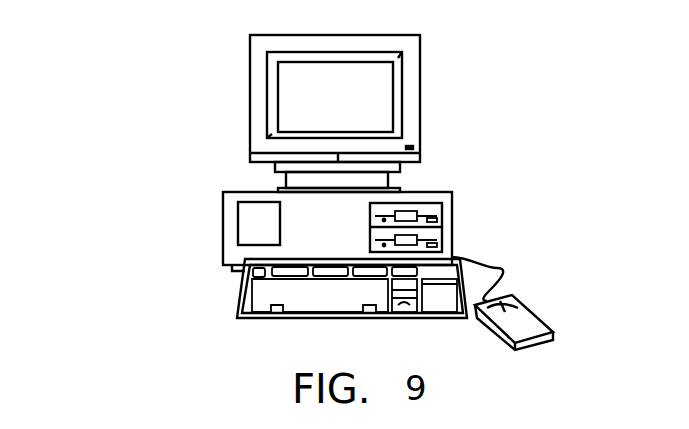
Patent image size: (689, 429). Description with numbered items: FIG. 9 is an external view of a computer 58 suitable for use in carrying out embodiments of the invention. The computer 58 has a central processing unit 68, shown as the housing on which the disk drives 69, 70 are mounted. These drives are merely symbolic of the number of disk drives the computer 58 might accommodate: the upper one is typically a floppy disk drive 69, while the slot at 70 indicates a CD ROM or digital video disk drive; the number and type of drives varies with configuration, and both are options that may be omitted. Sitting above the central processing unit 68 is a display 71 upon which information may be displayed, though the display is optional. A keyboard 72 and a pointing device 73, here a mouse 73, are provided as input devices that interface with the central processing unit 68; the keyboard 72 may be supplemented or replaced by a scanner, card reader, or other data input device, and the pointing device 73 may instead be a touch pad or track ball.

The computer 58 is at (326, 192).
The central processing unit 68 is at (311, 205).
The floppy disk drive 69 is at (366, 213).
The CD ROM or digital video disk drive 70 is at (366, 242).
The display 71 is at (430, 80).
The keyboard 72 is at (236, 288).
The pointing device 73 is at (543, 306).